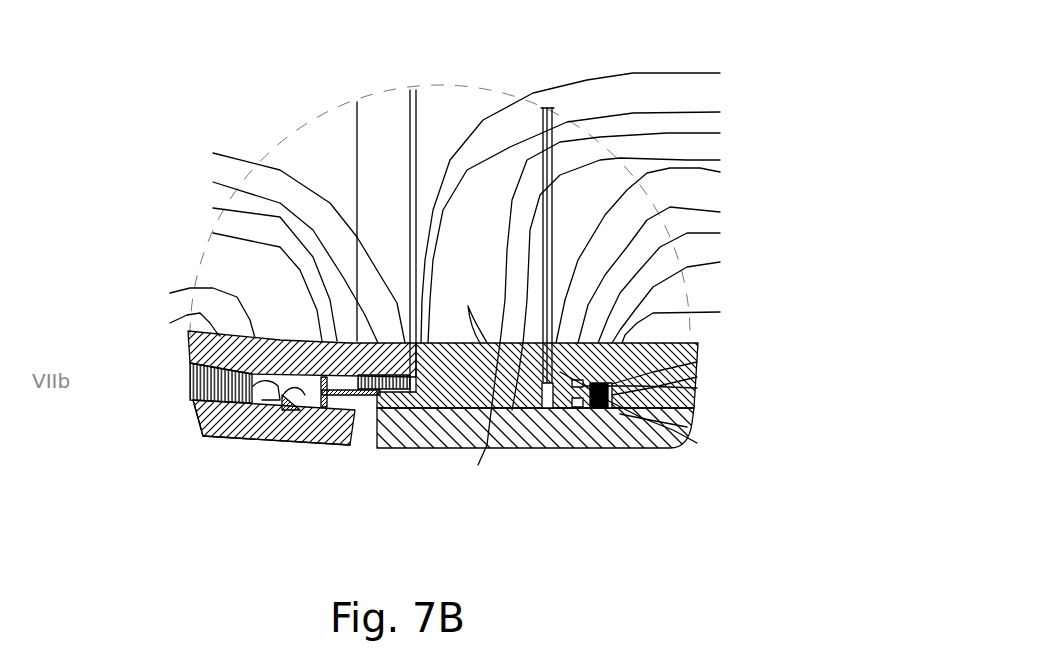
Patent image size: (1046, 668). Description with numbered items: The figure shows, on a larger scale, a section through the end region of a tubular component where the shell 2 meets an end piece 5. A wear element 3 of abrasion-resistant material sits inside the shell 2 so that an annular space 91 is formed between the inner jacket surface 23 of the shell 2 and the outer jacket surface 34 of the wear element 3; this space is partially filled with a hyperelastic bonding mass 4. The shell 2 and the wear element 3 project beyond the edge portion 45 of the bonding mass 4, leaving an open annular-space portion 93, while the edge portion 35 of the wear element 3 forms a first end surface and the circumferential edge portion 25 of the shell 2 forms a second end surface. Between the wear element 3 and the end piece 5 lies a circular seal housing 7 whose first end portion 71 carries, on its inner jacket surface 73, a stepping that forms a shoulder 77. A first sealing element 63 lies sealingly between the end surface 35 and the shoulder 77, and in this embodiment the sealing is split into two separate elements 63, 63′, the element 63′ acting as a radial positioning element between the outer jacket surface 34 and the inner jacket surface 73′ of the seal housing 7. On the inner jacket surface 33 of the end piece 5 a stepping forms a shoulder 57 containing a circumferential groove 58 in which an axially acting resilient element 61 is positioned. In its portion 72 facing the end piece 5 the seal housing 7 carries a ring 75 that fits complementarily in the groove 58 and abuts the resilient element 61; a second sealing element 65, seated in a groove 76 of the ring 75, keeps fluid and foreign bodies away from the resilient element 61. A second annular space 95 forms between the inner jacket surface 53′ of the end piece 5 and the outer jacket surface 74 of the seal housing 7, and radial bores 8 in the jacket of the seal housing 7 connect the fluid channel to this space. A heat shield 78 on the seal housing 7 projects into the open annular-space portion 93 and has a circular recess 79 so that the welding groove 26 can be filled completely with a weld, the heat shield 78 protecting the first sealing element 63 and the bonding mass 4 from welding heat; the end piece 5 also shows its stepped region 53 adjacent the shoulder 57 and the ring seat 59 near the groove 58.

The shell 2 is at (244, 456).
The wear element 3 is at (259, 354).
The bonding mass 4 is at (177, 384).
The end piece 5 is at (554, 460).
The seal housing 7 is at (527, 301).
The radial bores 8 is at (671, 245).
The inner jacket surface 23 is at (259, 454).
The edge portion 25 is at (357, 451).
The welding groove 26 is at (335, 445).
The inner jacket surface 33 is at (154, 329).
The outer jacket surface 34 is at (172, 312).
The edge portion 35 is at (233, 252).
The edge portion 45 is at (226, 447).
The cable layer 53 is at (707, 284).
The inner jacket surface 53′ is at (639, 448).
The shoulder 57 is at (697, 271).
The circumferential groove 58 is at (714, 371).
The seal line 59 is at (714, 352).
The resilient element 61 is at (700, 397).
The first sealing element 63 is at (247, 238).
The radial positioning element 63′ is at (211, 264).
The second sealing element 65 is at (688, 360).
The first end portion 71 is at (622, 220).
The portion 72 is at (664, 281).
The inner jacket surface 73 is at (639, 319).
The inner jacket surface 73′ is at (289, 451).
The outer jacket surface 74 is at (553, 448).
The ring 75 is at (718, 429).
The groove 76 is at (719, 316).
The shoulder 77 is at (618, 207).
The heat shield 78 is at (205, 278).
The circular recess 79 is at (404, 444).
The annular space 91 is at (146, 418).
The open annular-space portion 93 is at (219, 445).
The second annular space 95 is at (588, 446).